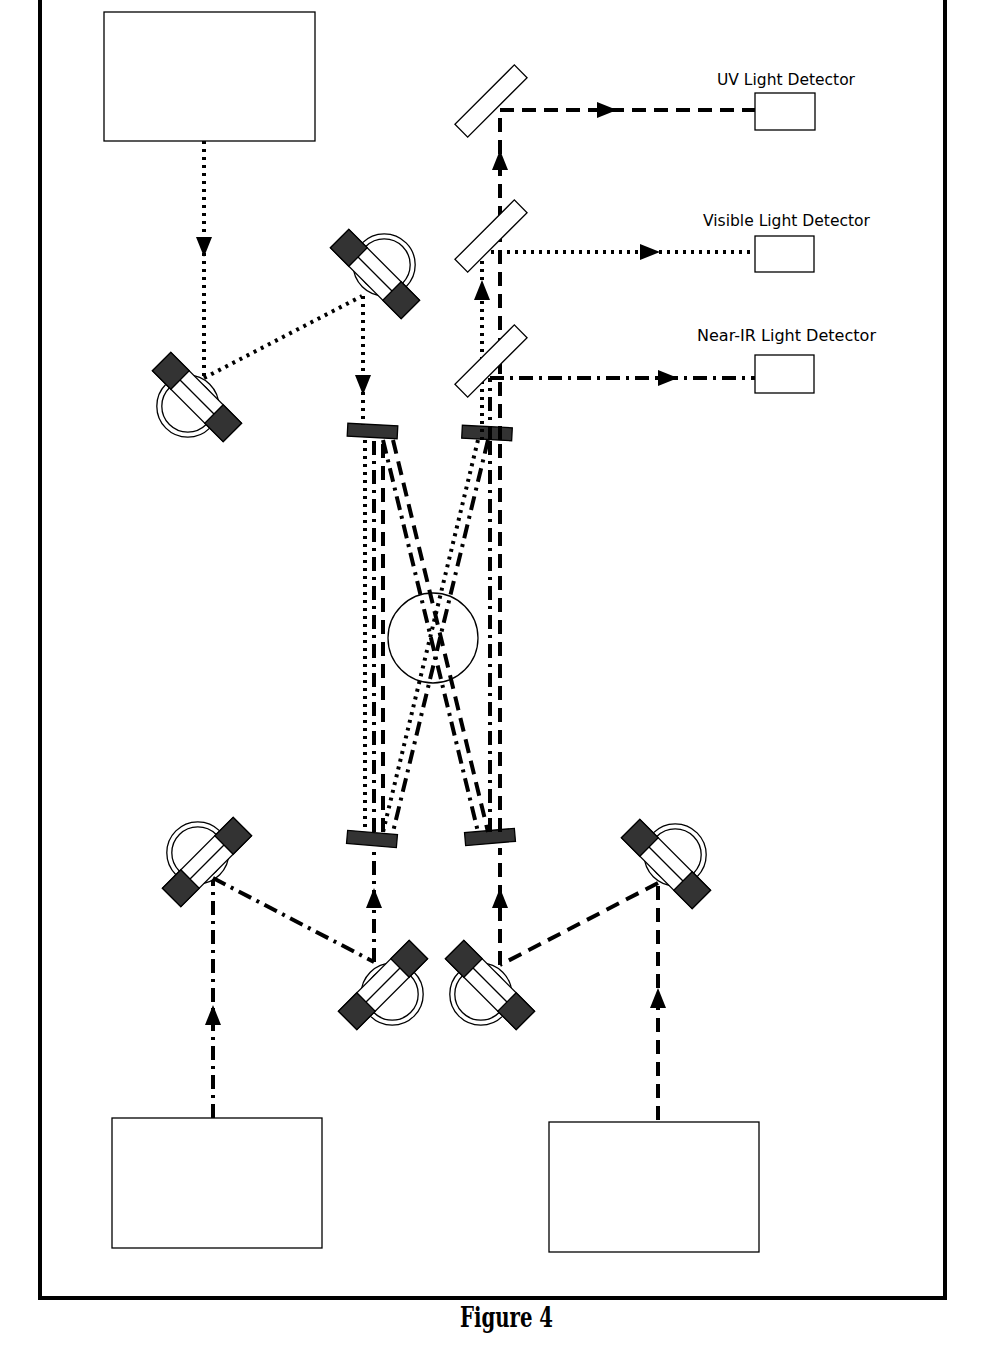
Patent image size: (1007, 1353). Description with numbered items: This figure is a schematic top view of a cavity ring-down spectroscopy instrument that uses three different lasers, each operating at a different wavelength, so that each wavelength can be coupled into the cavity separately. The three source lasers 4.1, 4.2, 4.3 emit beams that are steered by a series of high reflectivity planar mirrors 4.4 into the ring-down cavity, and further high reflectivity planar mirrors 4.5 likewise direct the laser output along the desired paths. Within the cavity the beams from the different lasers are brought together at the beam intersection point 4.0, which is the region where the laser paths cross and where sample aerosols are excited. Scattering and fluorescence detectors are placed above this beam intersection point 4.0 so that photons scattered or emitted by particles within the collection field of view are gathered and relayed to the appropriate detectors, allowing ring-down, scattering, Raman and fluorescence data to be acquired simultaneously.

The beam intersection point 4.0 is at (465, 634).
The visible laser 4.1 is at (196, 76).
The near-IR laser 4.2 is at (198, 1183).
The UV laser 4.3 is at (635, 1187).
The high reflectivity planar mirror 4.4 is at (432, 630).
The high reflectivity planar mirror 4.5 is at (482, 231).